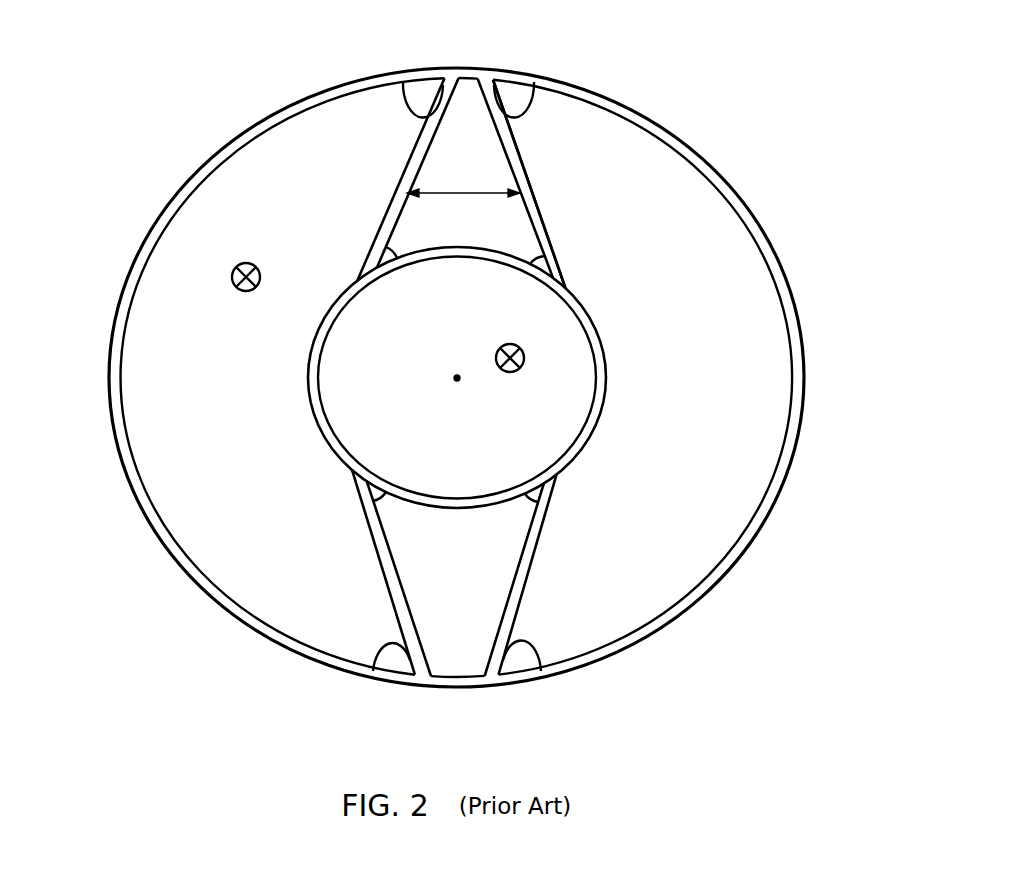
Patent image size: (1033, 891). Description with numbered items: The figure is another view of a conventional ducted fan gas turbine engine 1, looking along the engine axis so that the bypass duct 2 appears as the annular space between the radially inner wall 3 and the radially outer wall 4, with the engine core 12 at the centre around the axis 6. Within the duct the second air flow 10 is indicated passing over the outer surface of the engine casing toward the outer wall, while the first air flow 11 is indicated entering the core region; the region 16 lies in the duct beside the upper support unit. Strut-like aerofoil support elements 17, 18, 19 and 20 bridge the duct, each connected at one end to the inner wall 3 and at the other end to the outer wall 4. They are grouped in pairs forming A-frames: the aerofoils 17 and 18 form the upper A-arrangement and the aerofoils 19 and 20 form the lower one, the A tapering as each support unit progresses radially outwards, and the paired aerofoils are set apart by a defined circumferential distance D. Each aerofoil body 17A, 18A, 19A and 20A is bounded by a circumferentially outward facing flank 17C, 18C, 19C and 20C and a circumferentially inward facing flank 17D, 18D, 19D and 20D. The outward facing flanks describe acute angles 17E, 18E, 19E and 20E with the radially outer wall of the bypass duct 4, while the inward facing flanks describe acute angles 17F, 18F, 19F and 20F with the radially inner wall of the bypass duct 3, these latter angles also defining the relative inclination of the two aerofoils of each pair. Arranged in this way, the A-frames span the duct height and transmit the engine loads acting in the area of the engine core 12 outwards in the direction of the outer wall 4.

The wheel 1 is at (172, 122).
The bypass duct 2 is at (163, 297).
The inner wall 3 is at (307, 372).
The outer wall 4 is at (200, 192).
The wheel center 6 is at (455, 378).
The second air flow 10 is at (246, 263).
The first air flow 11 is at (524, 364).
The engine core 12 is at (439, 445).
The web portion between spokes 16 is at (556, 128).
The distance D is at (485, 192).
The aerofoil 17 is at (413, 140).
The first spoke channel 17A is at (386, 213).
The circumferentially outward facing flank 17C is at (377, 233).
The circumferentially inward facing flank 17D is at (392, 232).
The acute angle 17E is at (428, 92).
The acute angle 17F is at (382, 252).
The aerofoil 18 is at (592, 244).
The second spoke channel 18A is at (548, 226).
The circumferentially outward facing flank 18C is at (540, 210).
The circumferentially inward facing flank 18D is at (532, 226).
The acute angle 18E is at (516, 92).
The acute angle 18F is at (548, 262).
The aerofoil 19 is at (348, 577).
The third spoke channel 19A is at (396, 612).
The circumferentially outward facing flank 19C is at (360, 527).
The circumferentially inward facing flank 19D is at (396, 572).
The acute angle 19E is at (398, 660).
The acute angle 19F is at (372, 497).
The aerofoil 20 is at (567, 572).
The fourth spoke channel 20A is at (518, 606).
The circumferentially outward facing flank 20C is at (547, 518).
The circumferentially inward facing flank 20D is at (522, 550).
The acute angle 20E is at (517, 660).
The acute angle 20F is at (540, 500).